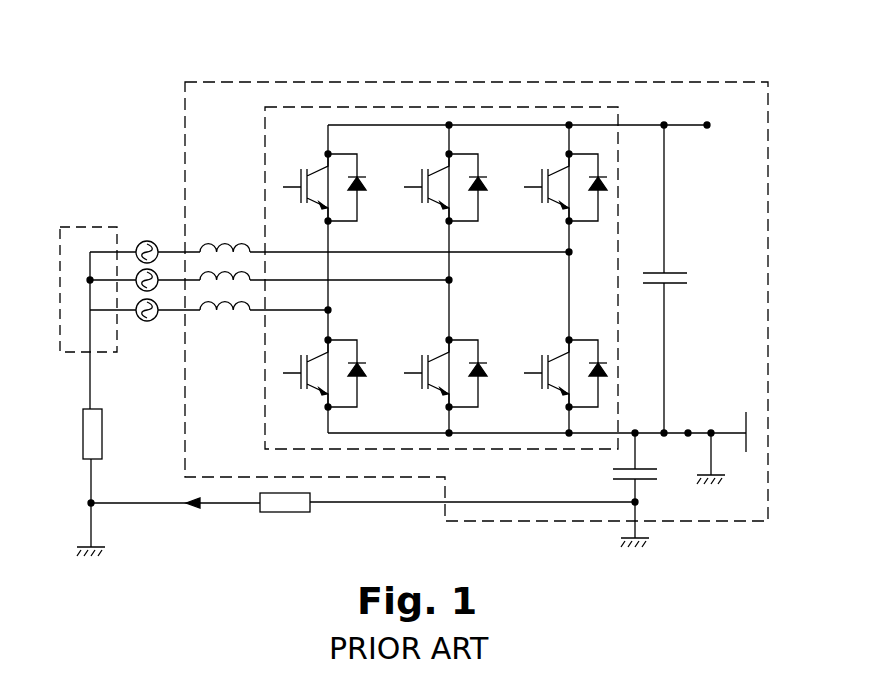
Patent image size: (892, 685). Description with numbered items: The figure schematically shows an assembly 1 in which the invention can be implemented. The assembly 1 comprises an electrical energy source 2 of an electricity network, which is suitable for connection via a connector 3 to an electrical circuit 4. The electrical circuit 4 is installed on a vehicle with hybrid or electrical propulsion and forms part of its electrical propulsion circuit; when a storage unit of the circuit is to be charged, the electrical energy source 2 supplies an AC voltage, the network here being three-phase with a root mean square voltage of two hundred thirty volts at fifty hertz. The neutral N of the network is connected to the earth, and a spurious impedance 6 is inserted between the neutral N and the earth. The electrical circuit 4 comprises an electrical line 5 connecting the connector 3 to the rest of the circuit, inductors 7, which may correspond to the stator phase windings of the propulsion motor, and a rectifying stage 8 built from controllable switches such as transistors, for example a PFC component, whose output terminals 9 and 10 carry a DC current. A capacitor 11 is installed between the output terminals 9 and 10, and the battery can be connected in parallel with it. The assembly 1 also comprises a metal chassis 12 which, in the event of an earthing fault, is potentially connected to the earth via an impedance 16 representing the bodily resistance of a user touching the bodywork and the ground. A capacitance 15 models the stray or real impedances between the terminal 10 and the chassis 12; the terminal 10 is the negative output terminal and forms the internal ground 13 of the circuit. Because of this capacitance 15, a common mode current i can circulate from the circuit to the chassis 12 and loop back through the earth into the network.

The assembly 1 is at (250, 55).
The electrical energy source 2 is at (74, 226).
The connector 3 is at (140, 241).
The electrical circuit 4 is at (778, 183).
The electrical line 5 is at (192, 250).
The spurious impedance 6 is at (83, 428).
The inductors 7 is at (217, 312).
The rectifying stage 8 is at (543, 107).
The output terminal 9 is at (664, 106).
The output terminal 10 is at (665, 431).
The capacitor 11 is at (668, 275).
The metal chassis 12 is at (513, 504).
The internal ground 13 is at (711, 459).
The capacitance 15 is at (650, 470).
The impedance 16 is at (282, 504).